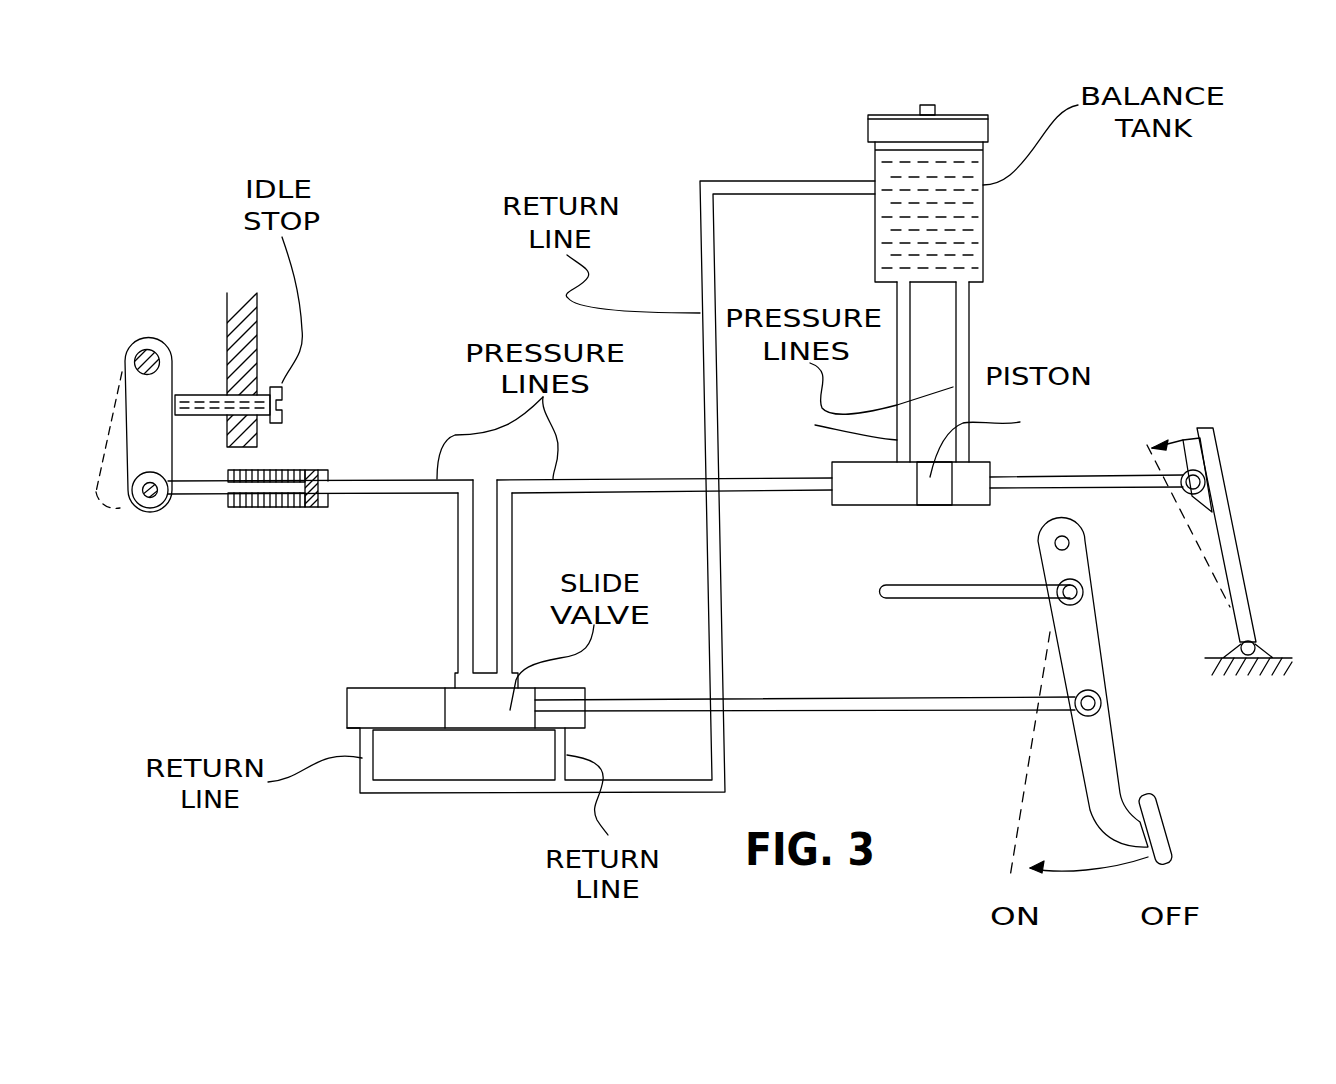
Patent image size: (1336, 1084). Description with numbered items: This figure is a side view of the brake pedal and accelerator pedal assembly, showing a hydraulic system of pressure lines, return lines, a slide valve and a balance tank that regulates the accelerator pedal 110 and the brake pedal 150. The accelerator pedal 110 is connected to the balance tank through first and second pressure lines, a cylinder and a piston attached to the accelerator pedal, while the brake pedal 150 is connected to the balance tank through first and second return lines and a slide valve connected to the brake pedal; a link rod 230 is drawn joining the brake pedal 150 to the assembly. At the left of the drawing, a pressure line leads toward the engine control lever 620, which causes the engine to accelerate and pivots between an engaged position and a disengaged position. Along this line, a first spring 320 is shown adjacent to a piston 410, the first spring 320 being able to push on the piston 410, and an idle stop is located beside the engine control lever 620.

The accelerator pedal 110 is at (1225, 480).
The brake pedal 150 is at (1115, 752).
The link rod 230 is at (950, 585).
The first spring 320 is at (298, 510).
The piston 410 is at (322, 470).
The engine control lever 620 is at (160, 443).